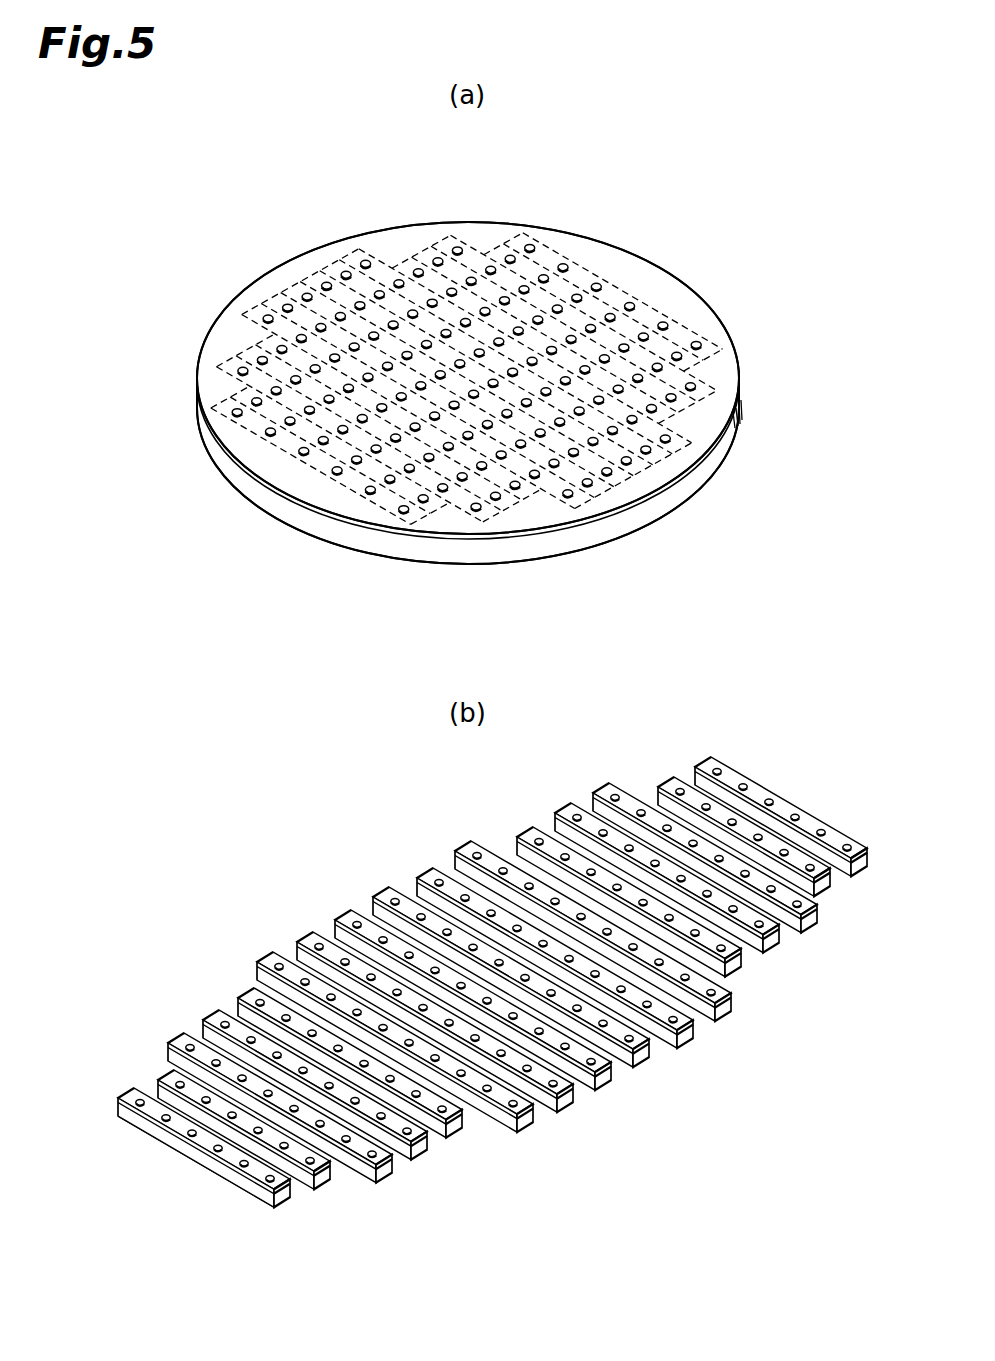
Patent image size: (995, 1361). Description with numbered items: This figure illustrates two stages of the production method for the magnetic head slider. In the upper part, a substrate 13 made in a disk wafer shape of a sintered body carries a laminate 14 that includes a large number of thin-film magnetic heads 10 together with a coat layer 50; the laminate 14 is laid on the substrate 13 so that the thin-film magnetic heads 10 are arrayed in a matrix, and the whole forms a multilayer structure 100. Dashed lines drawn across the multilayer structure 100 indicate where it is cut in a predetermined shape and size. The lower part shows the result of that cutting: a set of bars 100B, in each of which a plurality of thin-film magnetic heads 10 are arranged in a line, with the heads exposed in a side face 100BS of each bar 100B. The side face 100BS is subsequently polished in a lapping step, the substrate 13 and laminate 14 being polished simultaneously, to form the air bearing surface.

The thin-film magnetic head 10 is at (596, 283).
The substrate 13 is at (701, 464).
The laminate 14 is at (743, 428).
The coat layer 50 is at (651, 276).
The multilayer structure 100 is at (748, 222).
The bar 100B is at (288, 1208).
The side face 100BS is at (133, 1120).